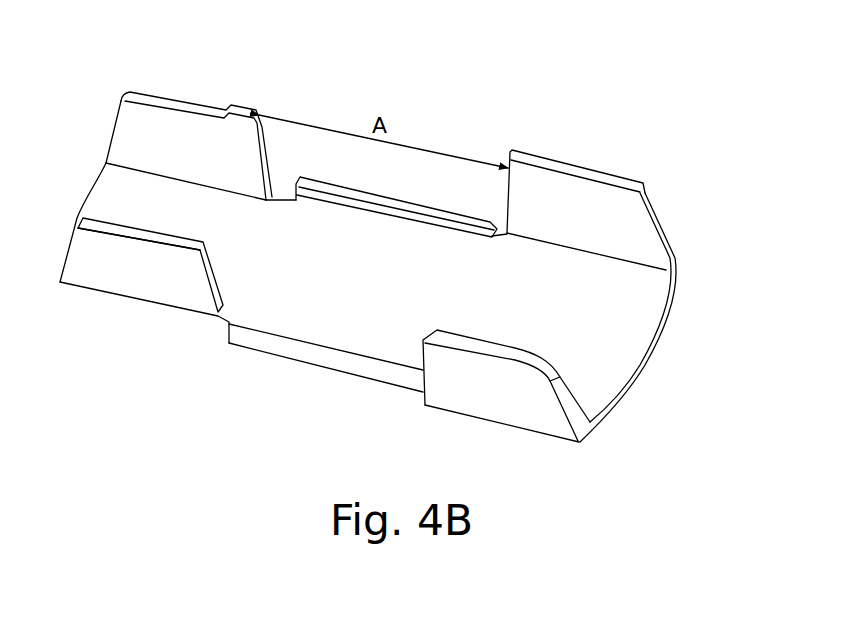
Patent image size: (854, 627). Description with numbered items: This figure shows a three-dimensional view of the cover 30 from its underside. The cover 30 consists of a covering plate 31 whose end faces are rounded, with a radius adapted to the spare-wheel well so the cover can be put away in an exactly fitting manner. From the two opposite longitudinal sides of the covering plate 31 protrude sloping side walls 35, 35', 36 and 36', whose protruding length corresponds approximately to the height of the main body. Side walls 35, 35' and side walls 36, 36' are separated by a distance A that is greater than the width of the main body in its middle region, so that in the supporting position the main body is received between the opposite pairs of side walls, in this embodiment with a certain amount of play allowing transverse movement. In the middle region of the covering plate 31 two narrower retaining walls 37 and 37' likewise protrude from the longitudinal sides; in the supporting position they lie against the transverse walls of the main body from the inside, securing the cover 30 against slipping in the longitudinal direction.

The cover 30 is at (158, 363).
The covering plate 31 is at (630, 315).
The side wall 35 is at (586, 181).
The side wall 35' is at (496, 409).
The side wall 36 is at (189, 120).
The side wall 36' is at (141, 295).
The retaining wall 37 is at (396, 240).
The retaining wall 37' is at (326, 382).